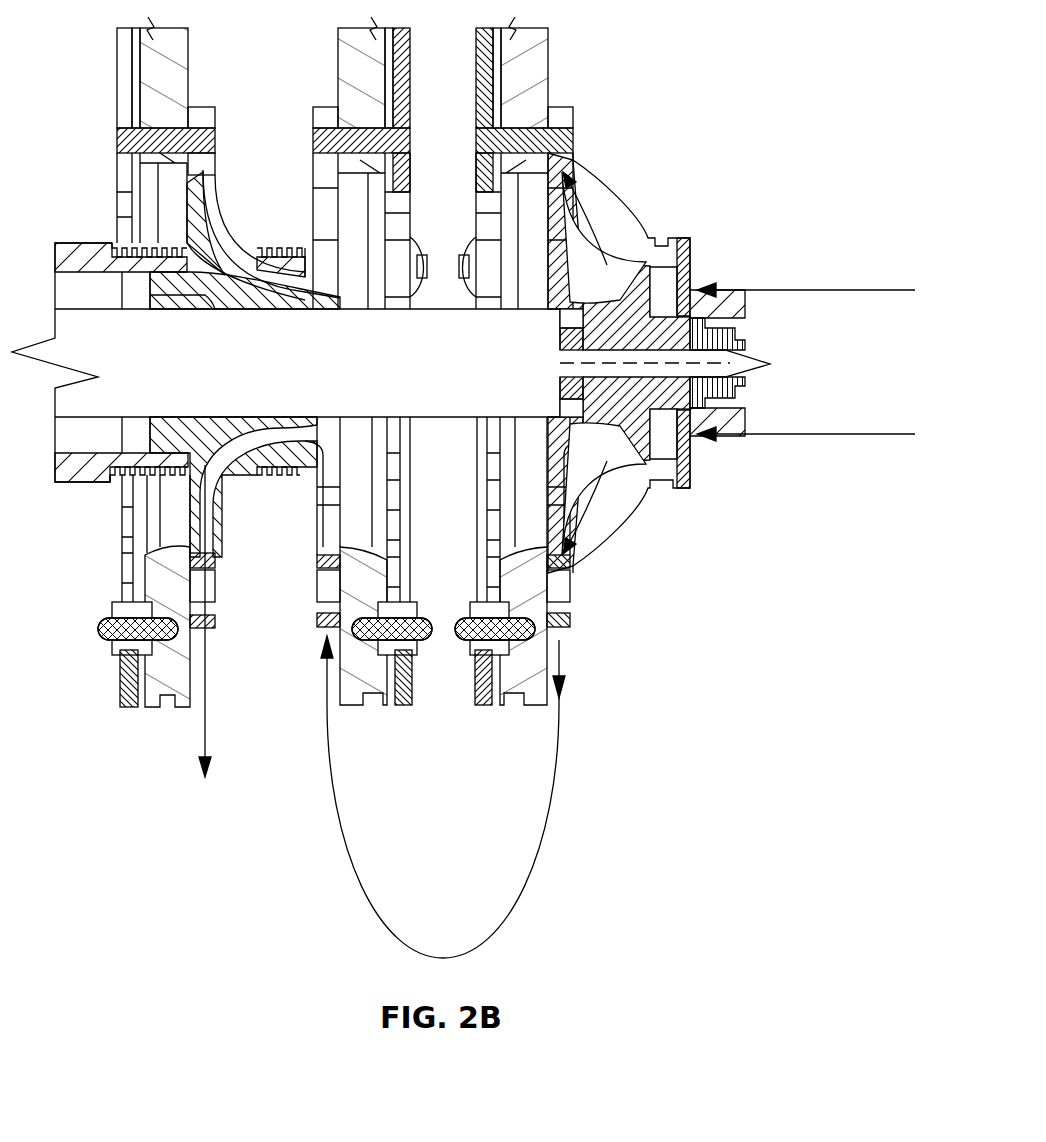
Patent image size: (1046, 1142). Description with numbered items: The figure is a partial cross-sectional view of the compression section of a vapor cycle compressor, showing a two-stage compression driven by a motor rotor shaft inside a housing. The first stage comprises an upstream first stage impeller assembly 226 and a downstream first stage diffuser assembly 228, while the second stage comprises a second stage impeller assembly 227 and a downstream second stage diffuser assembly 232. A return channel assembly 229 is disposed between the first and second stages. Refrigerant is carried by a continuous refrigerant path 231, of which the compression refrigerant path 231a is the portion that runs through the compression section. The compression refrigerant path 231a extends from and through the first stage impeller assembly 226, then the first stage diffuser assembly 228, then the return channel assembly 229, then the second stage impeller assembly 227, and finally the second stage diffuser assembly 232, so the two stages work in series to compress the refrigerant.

The first stage impeller assembly 226 is at (657, 505).
The second stage impeller assembly 227 is at (222, 493).
The first stage diffuser assembly 228 is at (516, 724).
The return channel assembly 229 is at (370, 724).
The continuous refrigerant path 231 is at (848, 284).
The compression refrigerant path 231a is at (564, 728).
The second stage diffuser assembly 232 is at (113, 716).